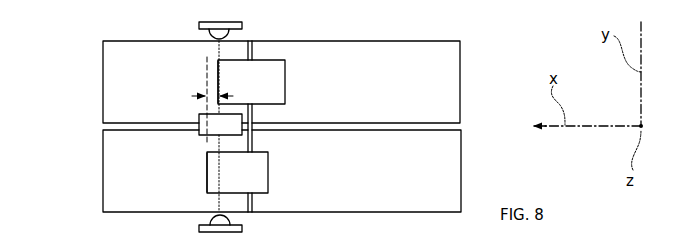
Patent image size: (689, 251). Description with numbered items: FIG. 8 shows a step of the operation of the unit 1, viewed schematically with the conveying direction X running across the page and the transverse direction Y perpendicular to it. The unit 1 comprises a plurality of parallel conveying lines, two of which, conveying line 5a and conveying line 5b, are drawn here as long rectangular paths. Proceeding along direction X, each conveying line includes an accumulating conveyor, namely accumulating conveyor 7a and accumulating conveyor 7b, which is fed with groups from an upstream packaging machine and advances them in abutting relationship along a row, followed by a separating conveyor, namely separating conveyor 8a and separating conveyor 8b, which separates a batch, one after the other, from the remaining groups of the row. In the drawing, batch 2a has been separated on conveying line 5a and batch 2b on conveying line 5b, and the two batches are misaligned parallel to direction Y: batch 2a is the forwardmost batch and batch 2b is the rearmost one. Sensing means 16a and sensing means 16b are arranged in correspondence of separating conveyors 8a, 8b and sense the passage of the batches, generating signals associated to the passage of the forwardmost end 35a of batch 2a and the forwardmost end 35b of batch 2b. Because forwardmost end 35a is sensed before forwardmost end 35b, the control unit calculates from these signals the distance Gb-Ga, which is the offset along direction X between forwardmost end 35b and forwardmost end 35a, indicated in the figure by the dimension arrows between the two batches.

The unit 1 is at (485, 41).
The batch 2a is at (269, 171).
The batch 2b is at (285, 85).
The conveying line 5a is at (439, 162).
The conveying line 5b is at (439, 83).
The accumulating conveyor 7a is at (400, 204).
The accumulating conveyor 7b is at (400, 50).
The separating conveyor 8a is at (113, 202).
The separating conveyor 8b is at (112, 58).
The sensing means 16a is at (200, 230).
The sensing means 16b is at (200, 24).
The forwardmost end 35a is at (203, 180).
The forwardmost end 35b is at (228, 75).
The distance Gb-Ga is at (216, 96).